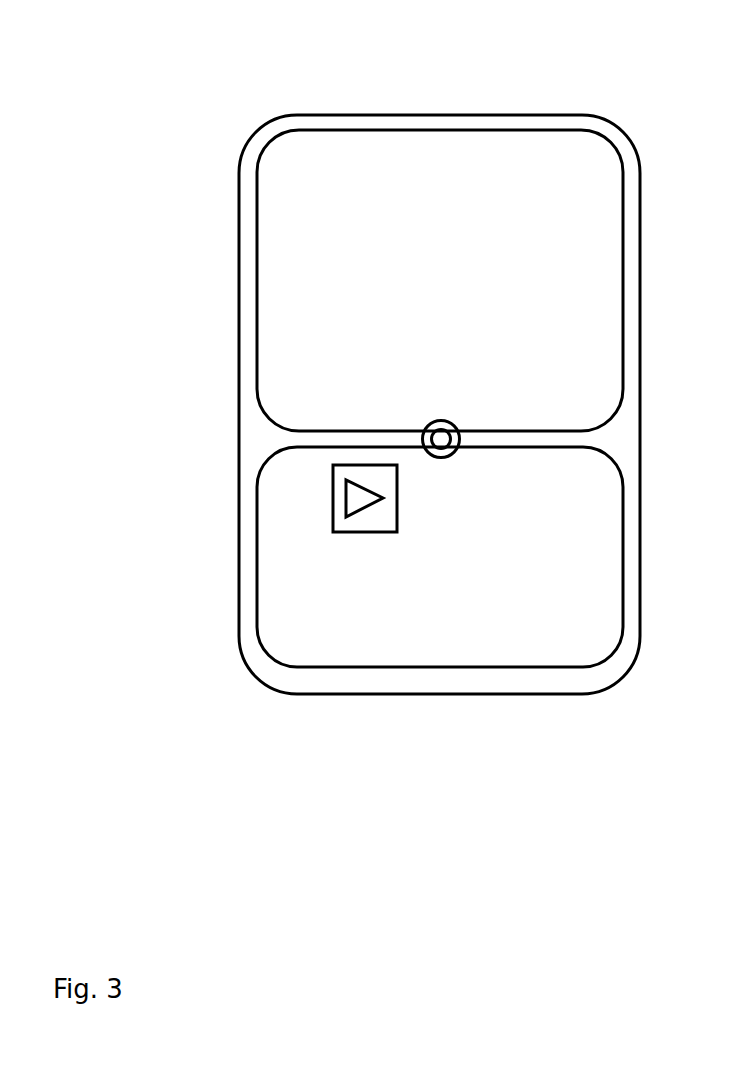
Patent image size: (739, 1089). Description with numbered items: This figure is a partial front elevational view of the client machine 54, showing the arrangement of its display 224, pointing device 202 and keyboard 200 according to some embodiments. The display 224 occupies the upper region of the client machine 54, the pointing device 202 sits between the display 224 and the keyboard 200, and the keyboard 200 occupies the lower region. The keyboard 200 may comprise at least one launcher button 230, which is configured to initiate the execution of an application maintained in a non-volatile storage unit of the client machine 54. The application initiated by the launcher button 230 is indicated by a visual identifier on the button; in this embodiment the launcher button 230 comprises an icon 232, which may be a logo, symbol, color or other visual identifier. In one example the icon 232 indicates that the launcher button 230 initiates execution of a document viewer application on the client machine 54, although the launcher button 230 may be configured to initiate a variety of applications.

The client machine 54 is at (439, 114).
The keyboard 200 is at (256, 562).
The display 224 is at (257, 281).
The pointing device 202 is at (440, 421).
The launcher button 230 is at (333, 499).
The icon 232 is at (346, 517).